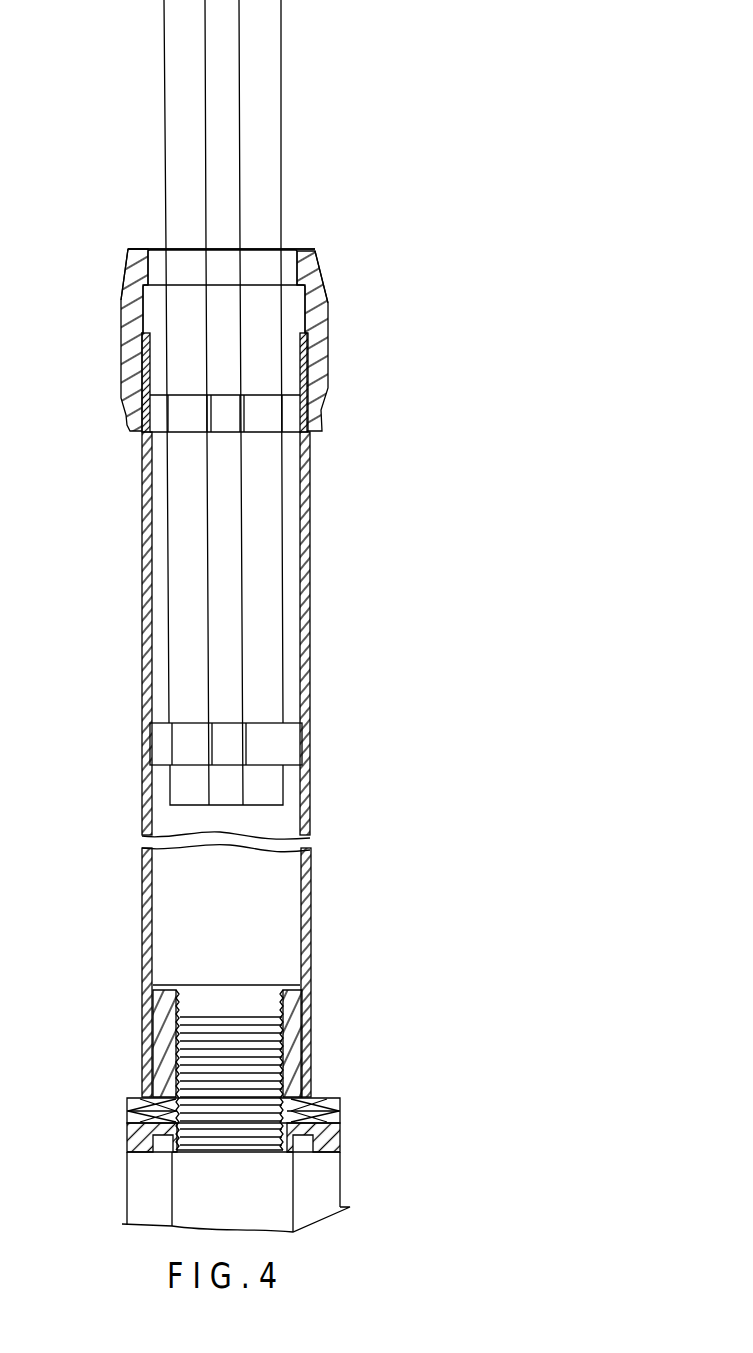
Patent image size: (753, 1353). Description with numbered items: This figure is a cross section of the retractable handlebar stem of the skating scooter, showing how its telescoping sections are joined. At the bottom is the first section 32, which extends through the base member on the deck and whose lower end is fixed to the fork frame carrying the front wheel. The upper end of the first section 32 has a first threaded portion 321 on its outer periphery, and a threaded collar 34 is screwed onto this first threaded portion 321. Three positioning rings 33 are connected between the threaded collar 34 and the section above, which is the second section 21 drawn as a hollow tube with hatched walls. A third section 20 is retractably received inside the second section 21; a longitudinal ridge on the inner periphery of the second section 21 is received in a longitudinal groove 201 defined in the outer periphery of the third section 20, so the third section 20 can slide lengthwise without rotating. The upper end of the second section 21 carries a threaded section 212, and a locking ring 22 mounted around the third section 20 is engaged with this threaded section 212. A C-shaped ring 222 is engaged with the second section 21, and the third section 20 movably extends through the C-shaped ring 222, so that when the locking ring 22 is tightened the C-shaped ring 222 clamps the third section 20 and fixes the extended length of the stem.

The third section 20 is at (270, 141).
The longitudinal groove 201 is at (230, 578).
The locking ring 22 is at (123, 330).
The C-shaped ring 222 is at (323, 295).
The threaded section 212 is at (326, 366).
The second section 21 is at (311, 912).
The threaded collar 34 is at (167, 1040).
The first threaded portion 321 is at (265, 1075).
The positioning rings 33 is at (340, 1104).
The first section 32 is at (270, 1202).